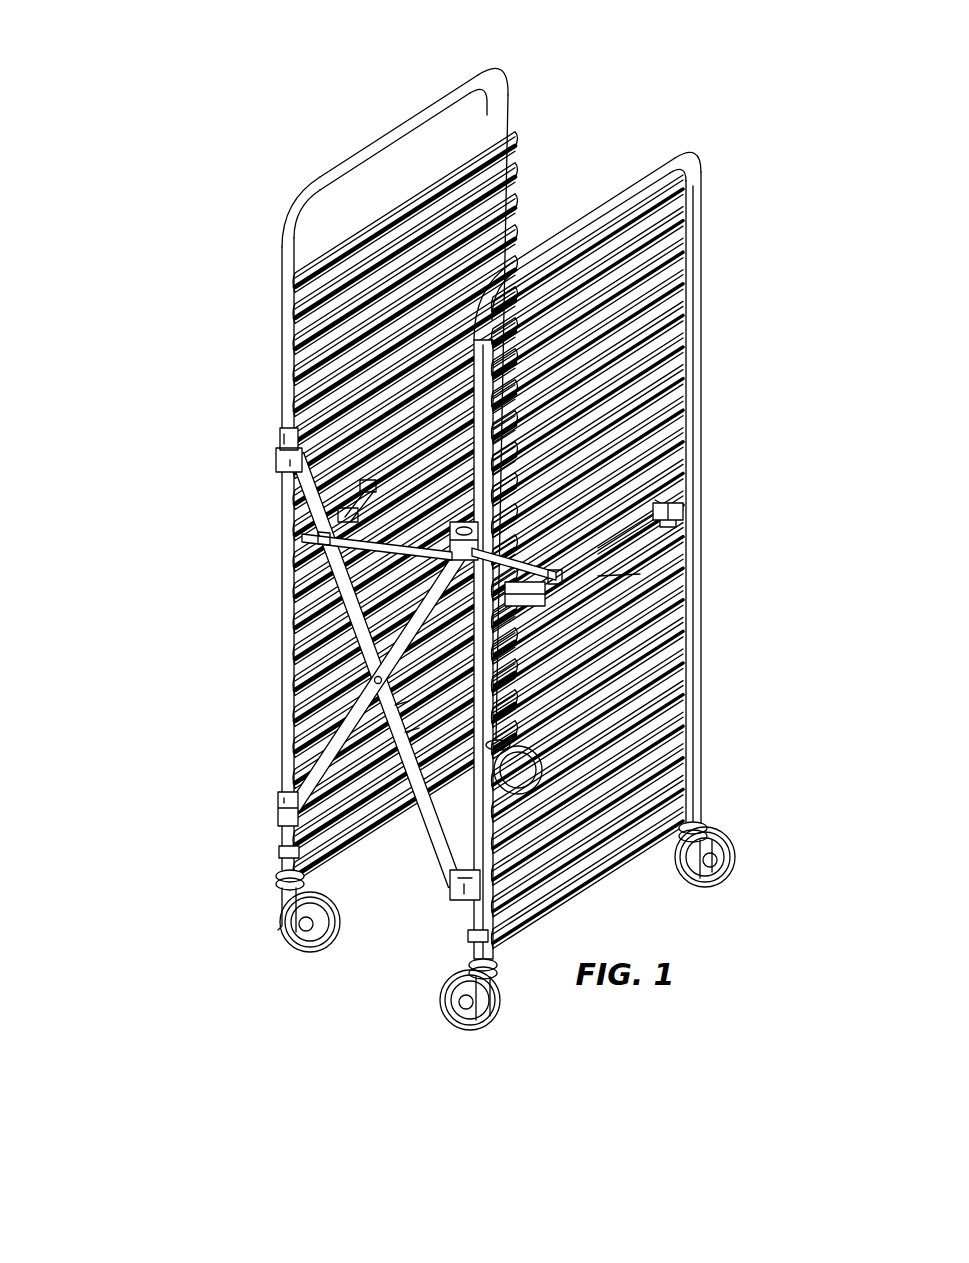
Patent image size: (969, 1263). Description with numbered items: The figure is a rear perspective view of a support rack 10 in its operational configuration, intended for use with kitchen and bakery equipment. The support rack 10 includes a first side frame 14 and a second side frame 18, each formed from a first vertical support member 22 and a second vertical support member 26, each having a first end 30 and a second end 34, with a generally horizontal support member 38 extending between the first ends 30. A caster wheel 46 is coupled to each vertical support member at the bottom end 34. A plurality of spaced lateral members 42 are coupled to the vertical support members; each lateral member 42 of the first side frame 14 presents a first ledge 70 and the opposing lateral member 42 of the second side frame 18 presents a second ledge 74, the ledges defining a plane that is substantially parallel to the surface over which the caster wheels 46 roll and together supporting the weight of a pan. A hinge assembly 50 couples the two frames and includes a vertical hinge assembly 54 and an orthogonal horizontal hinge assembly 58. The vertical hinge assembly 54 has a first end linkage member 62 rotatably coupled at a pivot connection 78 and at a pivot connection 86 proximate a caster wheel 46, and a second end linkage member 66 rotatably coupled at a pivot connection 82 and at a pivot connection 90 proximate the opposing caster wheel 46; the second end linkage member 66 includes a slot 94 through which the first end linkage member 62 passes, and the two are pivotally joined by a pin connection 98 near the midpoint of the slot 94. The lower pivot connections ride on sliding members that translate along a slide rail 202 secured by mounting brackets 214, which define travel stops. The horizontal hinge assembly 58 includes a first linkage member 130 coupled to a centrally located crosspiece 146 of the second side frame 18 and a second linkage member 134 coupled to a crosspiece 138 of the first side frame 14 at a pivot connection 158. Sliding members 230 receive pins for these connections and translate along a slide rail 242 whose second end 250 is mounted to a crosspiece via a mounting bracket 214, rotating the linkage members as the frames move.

The support rack 10 is at (737, 86).
The first side frame 14 is at (752, 342).
The second side frame 18 is at (192, 343).
The first vertical support member 22 is at (512, 137).
The second vertical support member 26 is at (505, 388).
The first end 30 is at (500, 75).
The second end 34 is at (283, 870).
The horizontal support member 38 is at (375, 150).
The lateral member 42 is at (653, 640).
The caster wheel 46 is at (308, 952).
The hinge assembly 50 is at (118, 575).
The vertical hinge assembly 54 is at (262, 655).
The horizontal hinge assembly 58 is at (424, 520).
The first end linkage member 62 is at (345, 740).
The second end linkage member 66 is at (440, 852).
The first support surface or ledge 70 is at (676, 238).
The second support surface or ledge 74 is at (325, 347).
The pivot connection 78 is at (350, 567).
The pivot connection 82 is at (280, 452).
The pivot connection 86 is at (283, 812).
The pivot connection 90 is at (463, 902).
The slot 94 is at (400, 762).
The pin connection 98 is at (372, 680).
The first linkage member 130 is at (360, 508).
The second linkage member 134 is at (524, 590).
The crosspiece 138 is at (667, 527).
The crosspiece 146 is at (312, 541).
The pivot connection 158 is at (552, 578).
The slide rail 202 is at (280, 850).
The mounting bracket 214 is at (673, 510).
The sliding member 230 is at (640, 574).
The slide rail 242 is at (640, 547).
The second end 250 is at (662, 505).